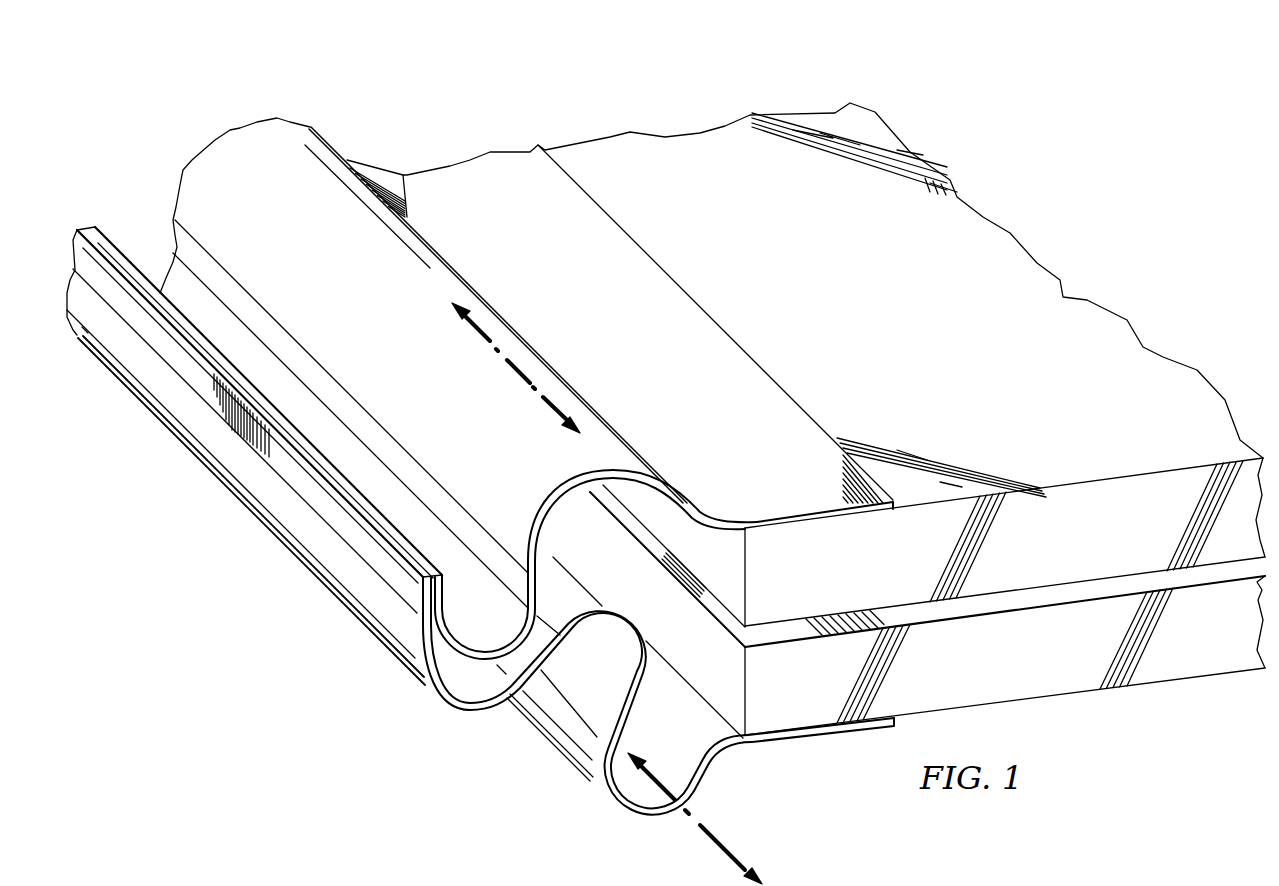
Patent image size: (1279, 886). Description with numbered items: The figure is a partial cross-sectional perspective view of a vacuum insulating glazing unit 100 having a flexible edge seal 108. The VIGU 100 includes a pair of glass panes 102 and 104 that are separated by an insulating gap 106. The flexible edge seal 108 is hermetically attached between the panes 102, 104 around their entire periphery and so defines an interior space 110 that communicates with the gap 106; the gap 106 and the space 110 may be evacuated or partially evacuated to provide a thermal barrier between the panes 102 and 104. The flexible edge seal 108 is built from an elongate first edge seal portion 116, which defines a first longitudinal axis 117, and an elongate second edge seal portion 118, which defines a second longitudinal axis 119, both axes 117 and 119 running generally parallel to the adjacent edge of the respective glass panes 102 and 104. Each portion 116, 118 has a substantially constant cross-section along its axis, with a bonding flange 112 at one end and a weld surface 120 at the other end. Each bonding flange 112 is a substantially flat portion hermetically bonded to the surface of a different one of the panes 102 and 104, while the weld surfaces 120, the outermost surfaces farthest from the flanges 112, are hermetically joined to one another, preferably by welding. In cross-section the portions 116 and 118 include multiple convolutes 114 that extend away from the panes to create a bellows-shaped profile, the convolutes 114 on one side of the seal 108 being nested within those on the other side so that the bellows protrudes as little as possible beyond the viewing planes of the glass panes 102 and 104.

The vacuum insulating glazing unit 100 is at (737, 69).
The glass pane 102 is at (1171, 376).
The glass pane 104 is at (1193, 680).
The insulating gap 106 is at (916, 621).
The flexible edge seal 108 is at (703, 280).
The interior space 110 is at (652, 501).
The bonding flange 112 is at (806, 438).
The convolutes 114 is at (444, 708).
The first edge seal portion 116 is at (270, 150).
The first longitudinal axis 117 is at (518, 368).
The second edge seal portion 118 is at (554, 724).
The second longitudinal axis 119 is at (698, 830).
The weld surface 120 is at (403, 578).